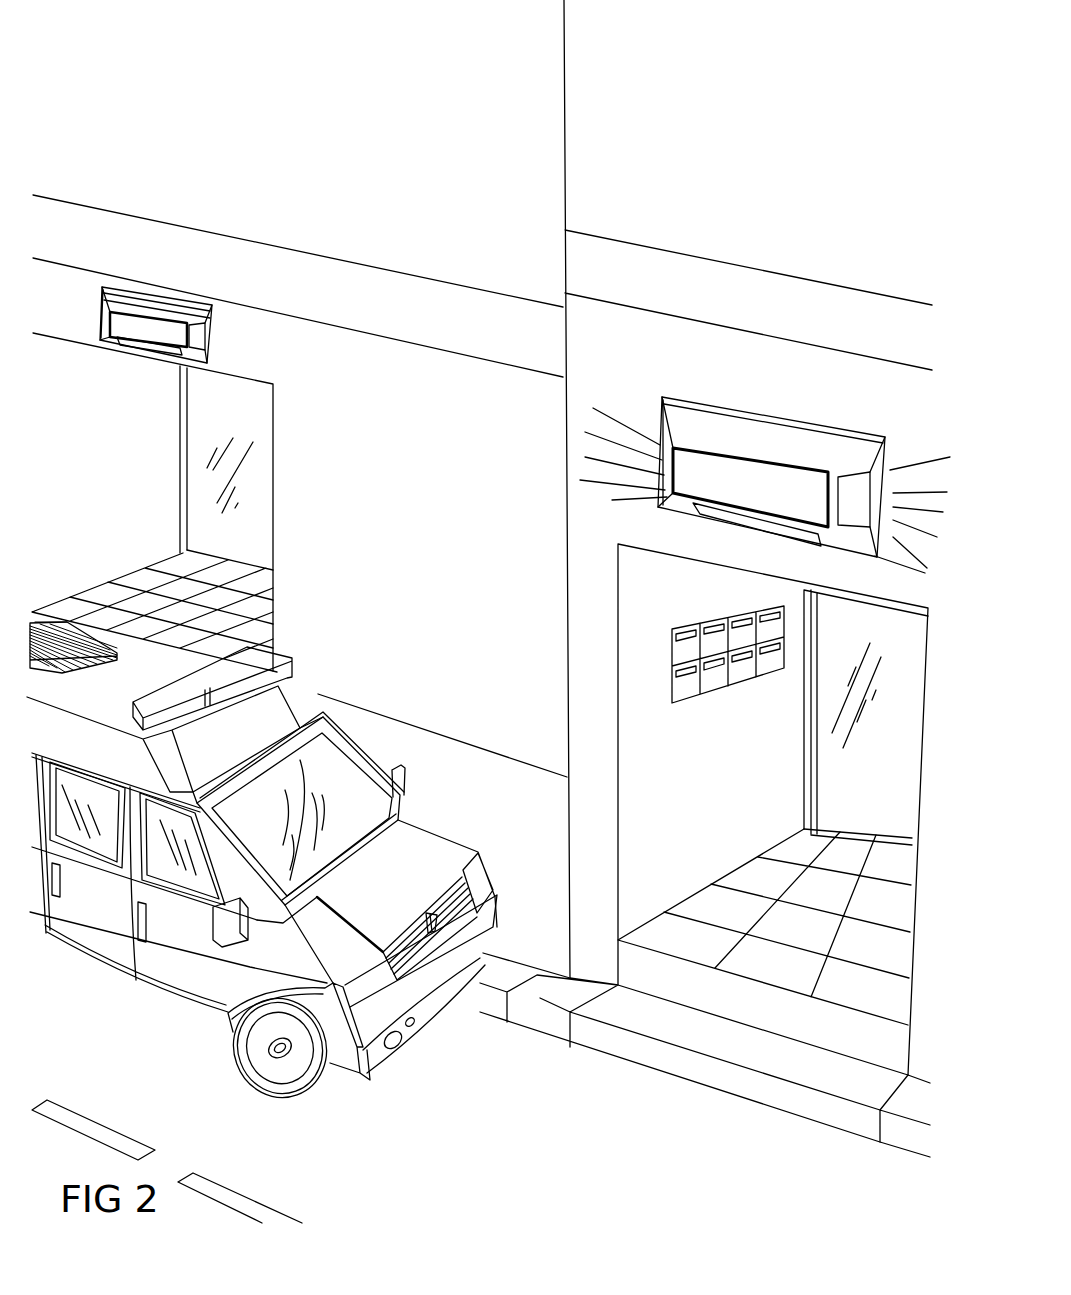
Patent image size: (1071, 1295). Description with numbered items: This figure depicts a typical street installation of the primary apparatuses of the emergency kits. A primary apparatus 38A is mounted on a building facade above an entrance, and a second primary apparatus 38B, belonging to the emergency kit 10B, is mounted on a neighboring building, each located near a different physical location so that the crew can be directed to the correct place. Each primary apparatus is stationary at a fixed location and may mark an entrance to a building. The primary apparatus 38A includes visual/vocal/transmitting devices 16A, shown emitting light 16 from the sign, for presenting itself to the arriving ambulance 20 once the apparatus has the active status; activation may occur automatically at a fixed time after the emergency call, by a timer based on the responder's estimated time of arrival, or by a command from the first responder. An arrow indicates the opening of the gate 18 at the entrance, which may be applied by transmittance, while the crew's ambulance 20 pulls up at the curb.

The emergency kit 10B is at (148, 258).
The primary apparatus 38B is at (170, 312).
The primary apparatus 38A is at (722, 424).
The emitted light 16 is at (665, 470).
The visual/vocal/transmitting devices 16A is at (852, 478).
The opening of the gate 18 is at (751, 785).
The ambulance 20 is at (318, 714).